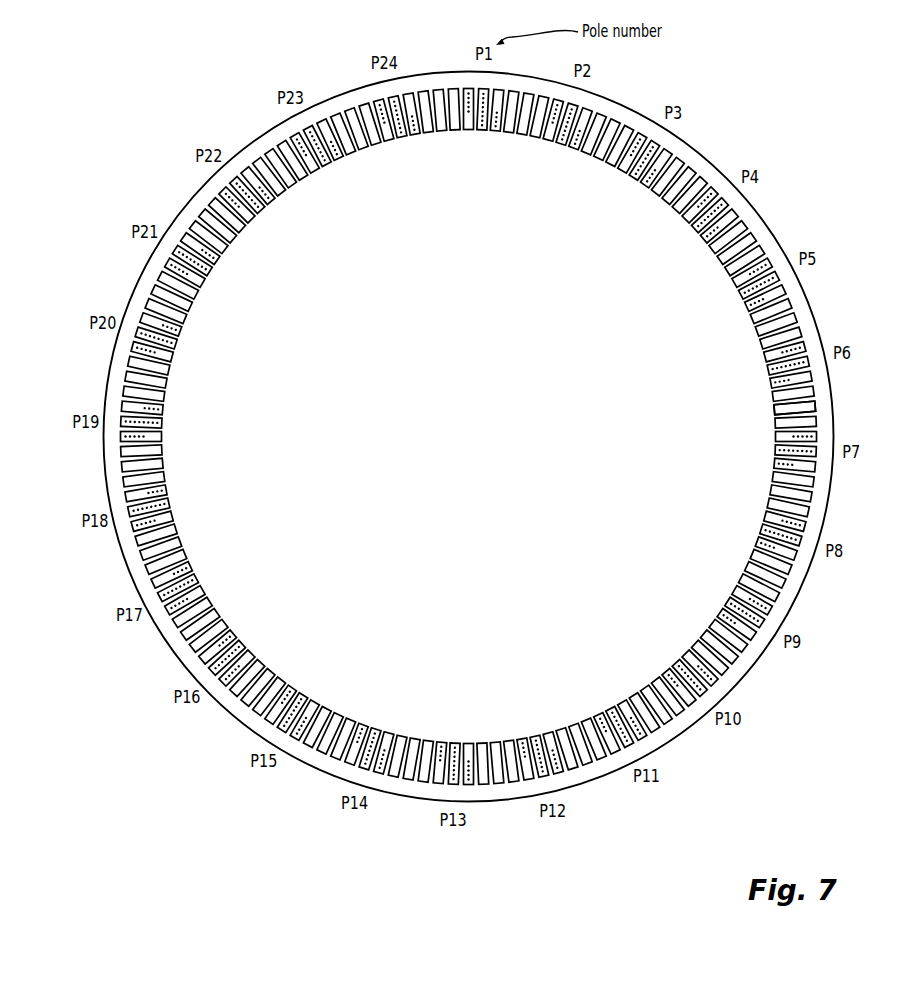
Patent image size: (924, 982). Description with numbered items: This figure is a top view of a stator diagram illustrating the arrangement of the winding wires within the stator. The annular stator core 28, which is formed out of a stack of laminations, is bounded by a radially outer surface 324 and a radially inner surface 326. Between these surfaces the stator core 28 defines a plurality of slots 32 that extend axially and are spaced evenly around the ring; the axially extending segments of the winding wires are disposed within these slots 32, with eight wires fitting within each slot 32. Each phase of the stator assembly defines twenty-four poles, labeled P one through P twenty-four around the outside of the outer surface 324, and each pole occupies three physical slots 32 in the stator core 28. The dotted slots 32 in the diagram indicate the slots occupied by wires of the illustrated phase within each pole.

The stator core 28 is at (504, 437).
The slots 32 is at (717, 243).
The radially outer surface 324 is at (830, 508).
The radially inner surface 326 is at (775, 405).